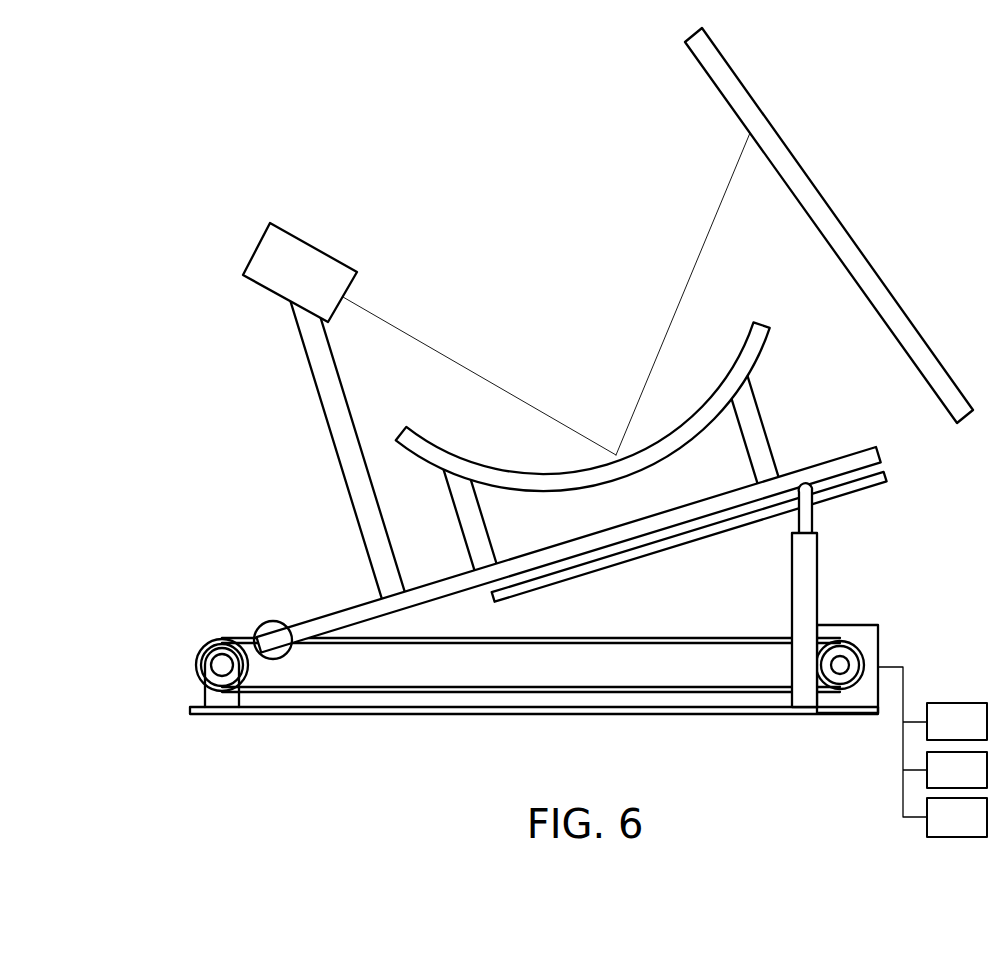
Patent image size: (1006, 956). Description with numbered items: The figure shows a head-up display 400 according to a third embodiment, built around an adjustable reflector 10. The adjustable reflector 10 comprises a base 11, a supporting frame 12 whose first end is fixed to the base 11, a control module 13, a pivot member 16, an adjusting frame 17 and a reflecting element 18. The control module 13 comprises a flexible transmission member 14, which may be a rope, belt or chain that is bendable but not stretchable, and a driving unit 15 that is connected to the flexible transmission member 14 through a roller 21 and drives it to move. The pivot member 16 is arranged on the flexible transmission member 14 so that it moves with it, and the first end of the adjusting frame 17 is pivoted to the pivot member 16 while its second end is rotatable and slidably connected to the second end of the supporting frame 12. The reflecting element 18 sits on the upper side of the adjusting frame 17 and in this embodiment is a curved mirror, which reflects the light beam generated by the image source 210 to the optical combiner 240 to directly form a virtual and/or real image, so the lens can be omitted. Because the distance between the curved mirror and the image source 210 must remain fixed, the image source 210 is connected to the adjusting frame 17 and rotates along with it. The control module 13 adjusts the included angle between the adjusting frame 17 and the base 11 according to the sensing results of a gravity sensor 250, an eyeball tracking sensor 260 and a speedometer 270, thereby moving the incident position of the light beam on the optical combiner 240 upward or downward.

The head-up display 400 is at (104, 132).
The adjustable reflector 10 is at (331, 765).
The base 11 is at (491, 712).
The supporting frame 12 is at (806, 692).
The control module 13 is at (864, 610).
The flexible transmission member 14 is at (629, 694).
The driving unit 15 is at (870, 643).
The pivot member 16 is at (276, 660).
The adjusting frame 17 is at (347, 615).
The reflecting element 18 is at (762, 338).
The roller 21 is at (843, 678).
The image source 210 is at (302, 250).
The optical combiner 240 is at (957, 420).
The gravity sensor 250 is at (957, 721).
The eyeball tracking sensor 260 is at (957, 770).
The speedometer 270 is at (957, 817).